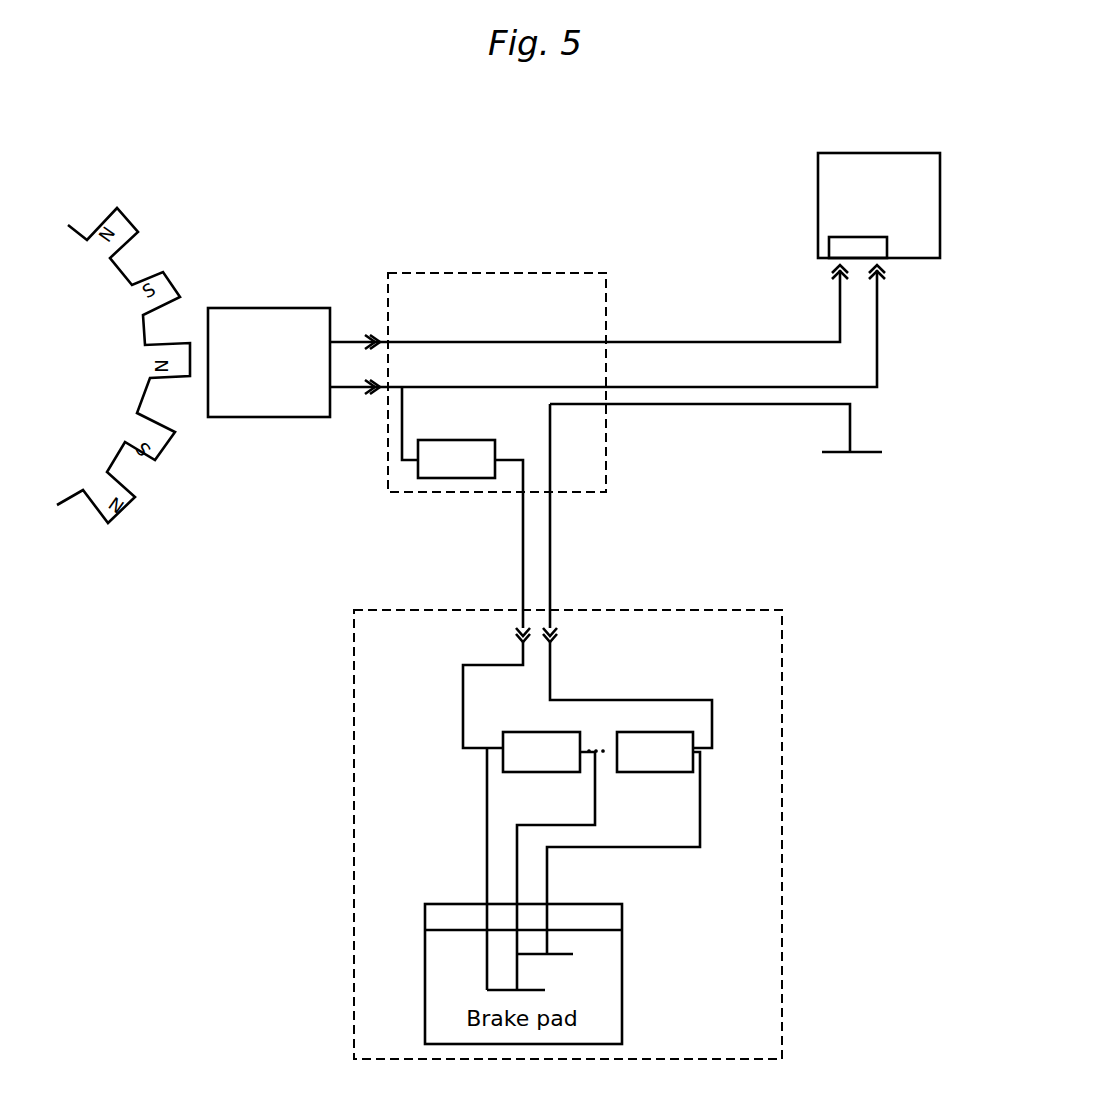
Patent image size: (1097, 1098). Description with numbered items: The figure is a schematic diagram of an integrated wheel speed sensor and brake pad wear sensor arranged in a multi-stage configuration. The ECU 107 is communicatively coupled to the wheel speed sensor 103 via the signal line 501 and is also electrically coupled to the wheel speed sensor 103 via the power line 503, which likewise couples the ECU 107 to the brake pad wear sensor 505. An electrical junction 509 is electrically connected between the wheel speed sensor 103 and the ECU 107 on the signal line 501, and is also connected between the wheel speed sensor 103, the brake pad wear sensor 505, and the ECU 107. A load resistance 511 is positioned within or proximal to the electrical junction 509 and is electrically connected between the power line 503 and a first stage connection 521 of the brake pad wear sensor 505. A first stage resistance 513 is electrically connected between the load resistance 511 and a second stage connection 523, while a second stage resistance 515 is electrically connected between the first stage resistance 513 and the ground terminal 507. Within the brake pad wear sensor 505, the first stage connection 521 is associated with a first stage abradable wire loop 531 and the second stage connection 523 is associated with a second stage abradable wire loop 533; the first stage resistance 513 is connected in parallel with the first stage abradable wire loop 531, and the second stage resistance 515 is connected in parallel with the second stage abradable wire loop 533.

The wheel speed sensor 103 is at (258, 418).
The ECU 107 is at (818, 180).
The signal line 501 is at (760, 340).
The power line 503 is at (880, 360).
The brake pad wear sensor 505 is at (352, 848).
The ground terminal 507 is at (852, 427).
The electrical junction 509 is at (388, 280).
The load resistance 511 is at (452, 478).
The first stage resistance 513 is at (573, 730).
The second stage resistance 515 is at (663, 730).
The first stage connection 521 is at (487, 795).
The second stage connection 523 is at (598, 788).
The first stage abradable wire loop 531 is at (555, 990).
The second stage abradable wire loop 533 is at (585, 954).